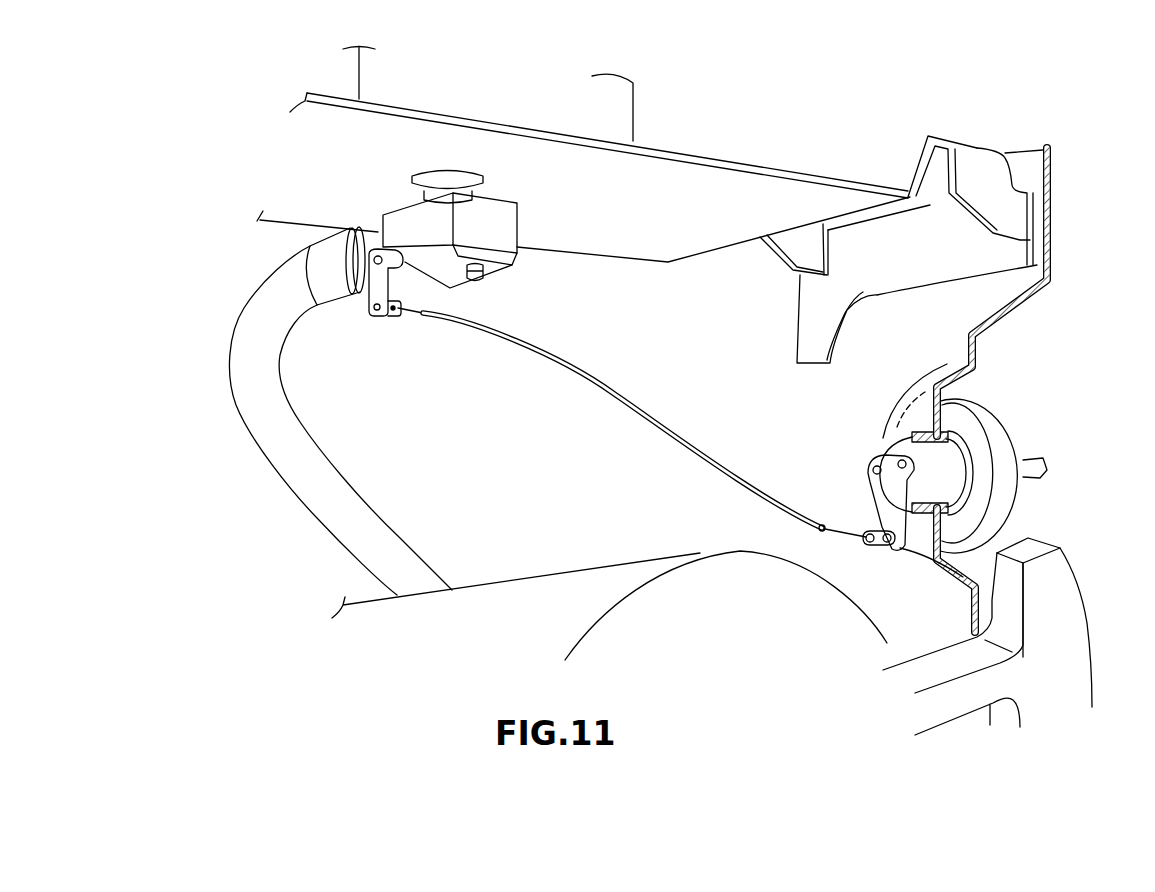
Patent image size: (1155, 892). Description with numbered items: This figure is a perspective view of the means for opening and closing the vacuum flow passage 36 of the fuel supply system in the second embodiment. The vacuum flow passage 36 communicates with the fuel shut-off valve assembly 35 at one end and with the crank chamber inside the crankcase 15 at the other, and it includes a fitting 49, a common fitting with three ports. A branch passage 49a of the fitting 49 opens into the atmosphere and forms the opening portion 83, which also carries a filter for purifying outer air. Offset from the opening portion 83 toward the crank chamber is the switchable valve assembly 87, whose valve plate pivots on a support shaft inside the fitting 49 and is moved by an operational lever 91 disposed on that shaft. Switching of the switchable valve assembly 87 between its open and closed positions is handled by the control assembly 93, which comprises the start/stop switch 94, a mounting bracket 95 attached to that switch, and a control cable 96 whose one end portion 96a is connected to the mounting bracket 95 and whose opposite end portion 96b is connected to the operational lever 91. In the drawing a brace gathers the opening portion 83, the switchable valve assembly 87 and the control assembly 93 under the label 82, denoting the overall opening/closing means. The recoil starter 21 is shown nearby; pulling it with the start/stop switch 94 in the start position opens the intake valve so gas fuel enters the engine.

The fuel shut-off valve assembly 35 is at (617, 118).
The vacuum flow passage 36 is at (438, 170).
The fitting 49 is at (497, 220).
The branch passage 49a is at (483, 275).
The operational lever 91 is at (377, 278).
The switchable valve assembly 87 is at (363, 313).
The opening portion 83 is at (470, 282).
The control assembly 93 is at (873, 447).
The operating mechanism 82 is at (615, 433).
The control cable 96 is at (713, 483).
The one end portion 96a is at (847, 542).
The opposite end portion 96b is at (407, 313).
The mounting bracket 95 is at (887, 497).
The start/stop switch 94 is at (1000, 433).
The crankcase 15 is at (535, 593).
The recoil starter 21 is at (1070, 613).